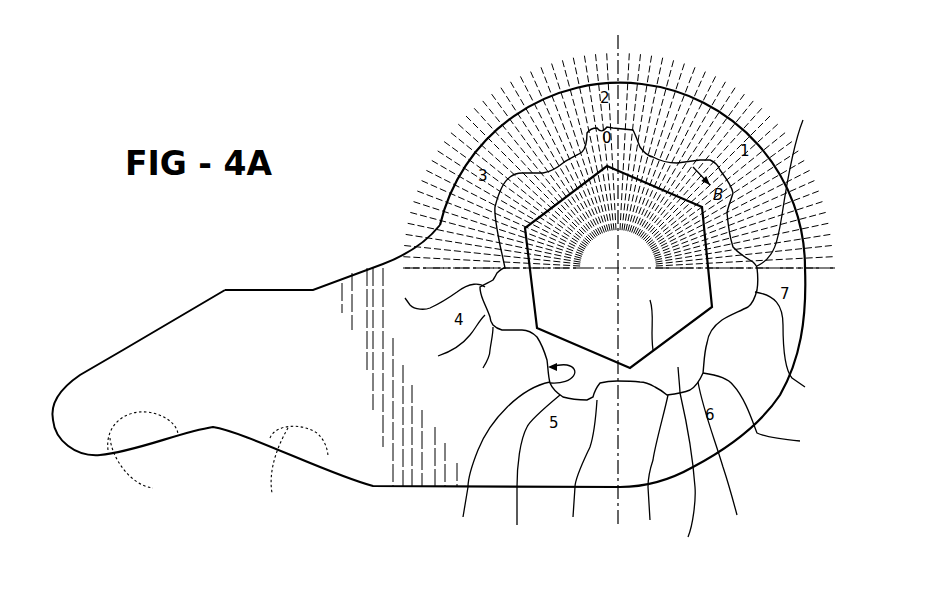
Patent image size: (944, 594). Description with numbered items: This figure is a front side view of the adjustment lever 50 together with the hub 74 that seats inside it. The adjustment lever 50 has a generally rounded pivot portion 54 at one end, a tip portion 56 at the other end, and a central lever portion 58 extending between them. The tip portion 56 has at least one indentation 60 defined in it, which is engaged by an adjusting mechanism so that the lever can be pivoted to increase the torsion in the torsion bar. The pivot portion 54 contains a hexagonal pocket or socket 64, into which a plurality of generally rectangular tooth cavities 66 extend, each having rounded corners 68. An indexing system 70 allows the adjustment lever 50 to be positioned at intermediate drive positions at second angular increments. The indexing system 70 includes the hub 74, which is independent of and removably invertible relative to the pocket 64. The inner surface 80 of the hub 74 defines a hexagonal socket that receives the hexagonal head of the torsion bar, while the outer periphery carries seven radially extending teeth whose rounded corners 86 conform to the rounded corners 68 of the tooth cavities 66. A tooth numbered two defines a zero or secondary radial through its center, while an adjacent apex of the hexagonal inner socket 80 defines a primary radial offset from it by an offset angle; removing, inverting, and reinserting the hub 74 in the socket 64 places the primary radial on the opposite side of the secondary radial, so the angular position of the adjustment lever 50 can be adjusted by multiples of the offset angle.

The adjustment lever 50 is at (353, 150).
The pivot portion 54 is at (722, 437).
The tip portion 56 is at (128, 370).
The lever portion 58 is at (278, 312).
The indentation 60 is at (218, 466).
The hexagonal pocket 64 is at (501, 461).
The tooth cavities 66 is at (624, 420).
The rounded corners 68 is at (616, 469).
The indexing system 70 is at (775, 108).
The hub 74 is at (687, 465).
The inner surface 80 is at (728, 366).
The rounded corners 86 is at (611, 247).